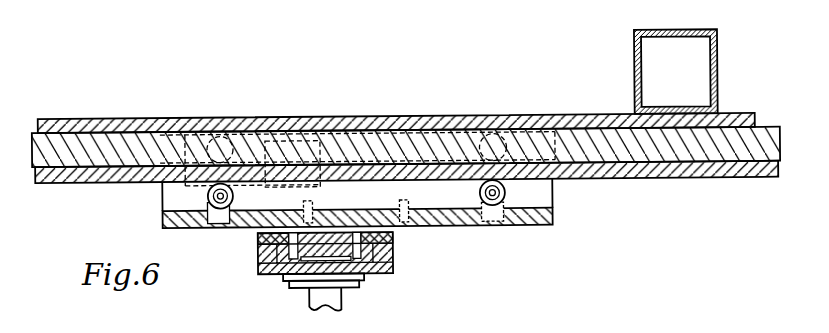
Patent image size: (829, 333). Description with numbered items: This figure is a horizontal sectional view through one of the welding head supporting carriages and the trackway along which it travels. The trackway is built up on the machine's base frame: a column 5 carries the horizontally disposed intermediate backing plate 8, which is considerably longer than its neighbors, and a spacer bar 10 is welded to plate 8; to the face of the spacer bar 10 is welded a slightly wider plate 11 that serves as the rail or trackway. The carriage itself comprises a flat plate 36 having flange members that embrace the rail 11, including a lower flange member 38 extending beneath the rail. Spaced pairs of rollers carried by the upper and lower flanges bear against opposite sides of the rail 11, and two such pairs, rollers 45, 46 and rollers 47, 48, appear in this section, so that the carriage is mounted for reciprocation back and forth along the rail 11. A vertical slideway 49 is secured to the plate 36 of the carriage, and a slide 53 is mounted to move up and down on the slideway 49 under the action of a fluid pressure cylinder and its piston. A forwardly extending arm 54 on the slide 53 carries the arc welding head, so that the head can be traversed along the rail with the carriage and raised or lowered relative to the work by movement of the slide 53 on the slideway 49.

The column 5 is at (719, 74).
The intermediate backing plate 8 is at (584, 121).
The spacer bar 10 is at (80, 137).
The rail 11 is at (63, 170).
The flat plate 36 is at (533, 224).
The lower flange member 38 is at (447, 194).
The roller 45 is at (207, 116).
The roller 46 is at (229, 224).
The roller 47 is at (480, 134).
The roller 48 is at (479, 212).
The vertical slideway 49 is at (365, 272).
The slide 53 is at (283, 270).
The forwardly extending arm 54 is at (334, 300).